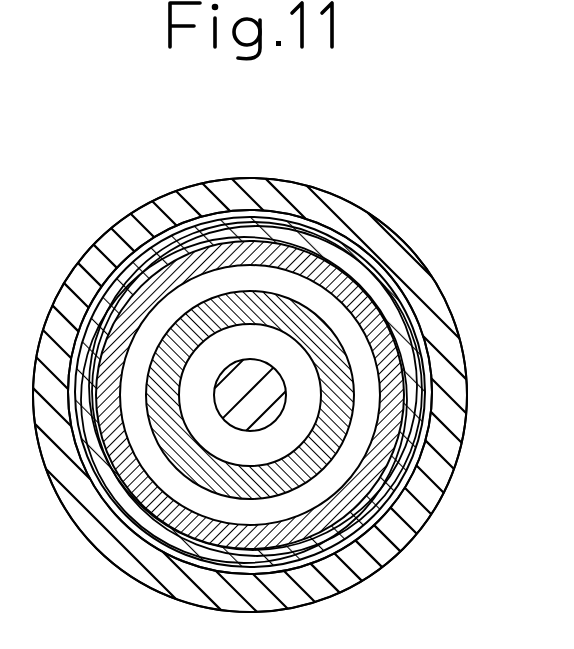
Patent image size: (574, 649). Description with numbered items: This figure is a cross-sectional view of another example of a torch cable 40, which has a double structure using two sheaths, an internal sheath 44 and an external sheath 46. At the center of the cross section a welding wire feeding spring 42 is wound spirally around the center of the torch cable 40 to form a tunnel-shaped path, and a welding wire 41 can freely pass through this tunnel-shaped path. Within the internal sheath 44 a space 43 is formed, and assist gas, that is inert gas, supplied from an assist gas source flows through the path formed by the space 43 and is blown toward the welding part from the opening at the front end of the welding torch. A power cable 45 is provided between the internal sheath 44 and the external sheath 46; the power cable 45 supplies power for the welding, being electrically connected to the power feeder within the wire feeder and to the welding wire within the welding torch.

The torch cable 40 is at (320, 163).
The welding wire 41 is at (265, 403).
The welding wire feeding spring 42 is at (337, 406).
The space 43 is at (367, 368).
The internal sheath 44 is at (378, 284).
The power cable 45 is at (402, 316).
The external sheath 46 is at (362, 225).